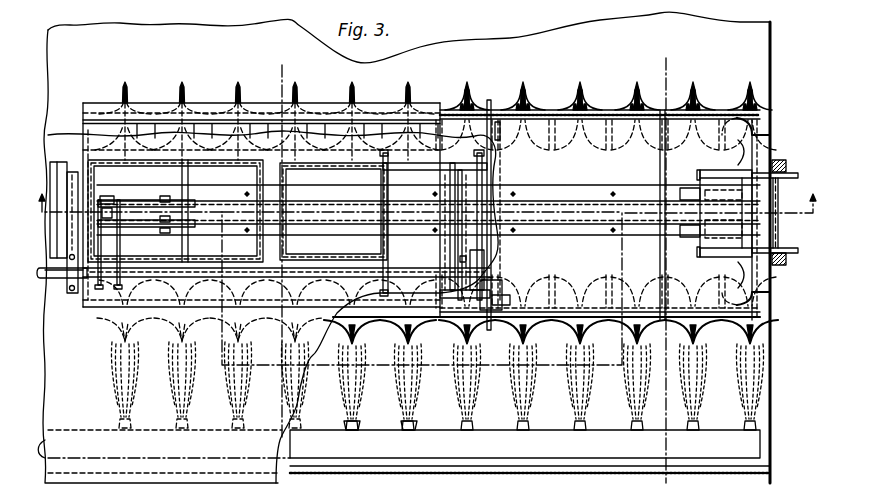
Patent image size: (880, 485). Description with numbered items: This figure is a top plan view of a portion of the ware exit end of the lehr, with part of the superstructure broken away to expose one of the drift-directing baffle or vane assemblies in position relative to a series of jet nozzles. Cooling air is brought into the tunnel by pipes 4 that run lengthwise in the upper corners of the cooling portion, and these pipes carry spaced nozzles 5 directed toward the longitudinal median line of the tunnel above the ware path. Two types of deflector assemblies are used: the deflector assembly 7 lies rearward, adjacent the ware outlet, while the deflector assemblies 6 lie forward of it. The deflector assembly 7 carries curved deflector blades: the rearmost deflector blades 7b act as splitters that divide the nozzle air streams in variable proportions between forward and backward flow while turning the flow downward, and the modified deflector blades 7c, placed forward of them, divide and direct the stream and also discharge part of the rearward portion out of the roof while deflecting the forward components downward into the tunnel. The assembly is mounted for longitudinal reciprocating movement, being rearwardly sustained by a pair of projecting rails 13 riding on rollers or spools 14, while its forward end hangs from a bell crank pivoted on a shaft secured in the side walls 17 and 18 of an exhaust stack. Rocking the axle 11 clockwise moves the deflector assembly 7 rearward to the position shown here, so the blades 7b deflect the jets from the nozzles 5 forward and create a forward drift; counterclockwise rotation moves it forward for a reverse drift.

The pipes 4 is at (425, 432).
The nozzles 5 is at (282, 65).
The deflector assemblies 6 is at (666, 58).
The deflector assembly 7 is at (551, 108).
The deflector blades 7b is at (588, 348).
The deflector blades 7c is at (396, 348).
The axle 11 is at (45, 280).
The projecting rails 13 is at (790, 172).
The rollers or spools 14 is at (781, 160).
The side wall 17 is at (160, 165).
The side wall 18 is at (157, 258).